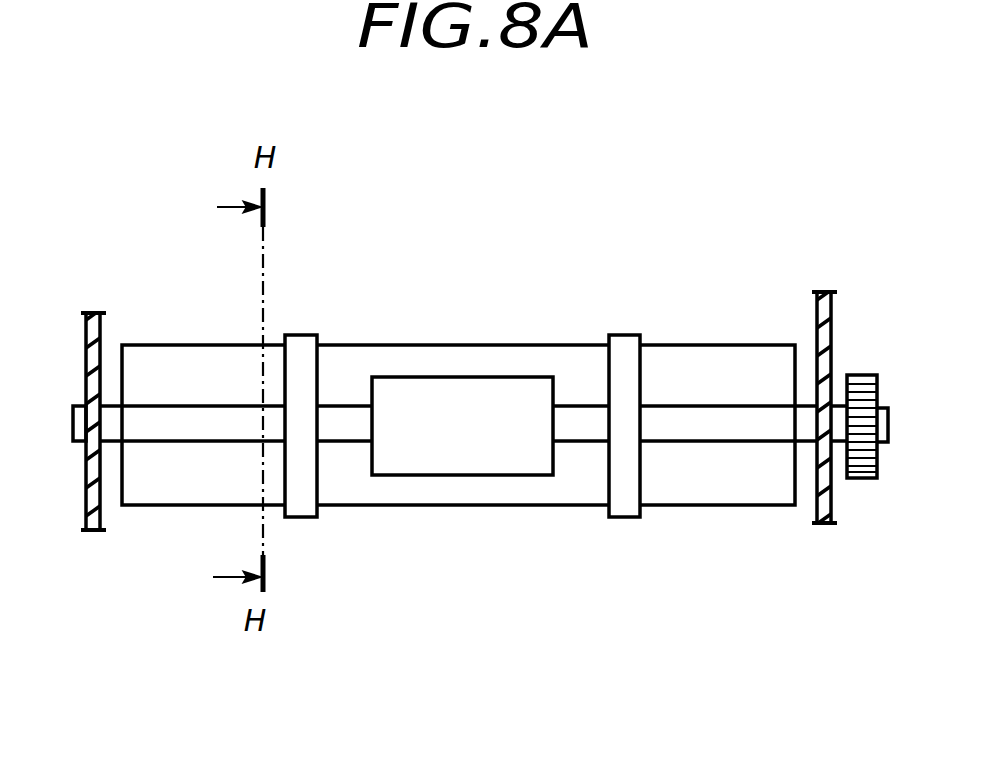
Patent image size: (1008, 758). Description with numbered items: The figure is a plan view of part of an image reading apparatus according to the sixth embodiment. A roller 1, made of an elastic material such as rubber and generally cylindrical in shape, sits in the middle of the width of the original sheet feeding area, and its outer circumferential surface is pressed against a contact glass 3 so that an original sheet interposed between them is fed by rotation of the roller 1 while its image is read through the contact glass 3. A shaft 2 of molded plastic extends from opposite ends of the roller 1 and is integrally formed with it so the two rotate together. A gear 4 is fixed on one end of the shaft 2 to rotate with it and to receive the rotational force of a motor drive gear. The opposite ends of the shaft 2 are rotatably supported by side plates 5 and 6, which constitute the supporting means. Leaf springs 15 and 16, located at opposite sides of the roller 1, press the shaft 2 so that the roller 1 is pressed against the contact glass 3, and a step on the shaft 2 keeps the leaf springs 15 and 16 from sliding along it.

The roller 1 is at (468, 447).
The shaft 2 is at (203, 420).
The contact glass 3 is at (697, 485).
The gear 4 is at (860, 377).
The side plate 5 is at (833, 327).
The side plate 6 is at (90, 464).
The leaf spring 15 is at (627, 345).
The leaf spring 16 is at (303, 347).